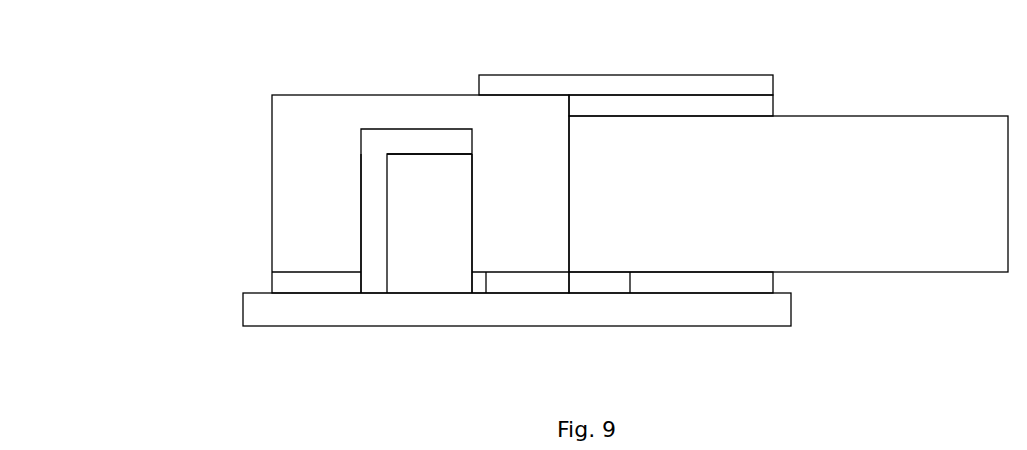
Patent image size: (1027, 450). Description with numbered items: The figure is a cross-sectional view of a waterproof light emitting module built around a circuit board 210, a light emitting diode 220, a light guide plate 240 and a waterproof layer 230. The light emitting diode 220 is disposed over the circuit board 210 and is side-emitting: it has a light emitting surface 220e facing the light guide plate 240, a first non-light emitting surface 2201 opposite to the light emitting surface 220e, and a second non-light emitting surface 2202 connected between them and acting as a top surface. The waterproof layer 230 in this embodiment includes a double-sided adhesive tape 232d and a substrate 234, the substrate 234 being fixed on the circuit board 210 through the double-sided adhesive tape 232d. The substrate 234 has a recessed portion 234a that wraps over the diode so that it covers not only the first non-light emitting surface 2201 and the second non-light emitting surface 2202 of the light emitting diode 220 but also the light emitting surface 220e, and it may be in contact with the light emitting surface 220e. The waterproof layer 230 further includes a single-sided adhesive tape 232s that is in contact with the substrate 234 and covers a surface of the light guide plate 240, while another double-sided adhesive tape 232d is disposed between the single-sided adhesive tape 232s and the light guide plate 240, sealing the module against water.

The circuit board 210 is at (753, 308).
The light emitting diode 220 is at (432, 281).
The first non-light emitting surface 2201 is at (409, 152).
The second non-light emitting surface 2202 is at (429, 95).
The light emitting surface 220e is at (486, 152).
The waterproof layer 230 is at (170, 143).
The double-sided adhesive tape 232d is at (710, 107).
The single-sided adhesive tape 232s is at (638, 88).
The substrate 234 is at (288, 170).
The recessed portion 234a is at (369, 267).
The light guide plate 240 is at (927, 262).